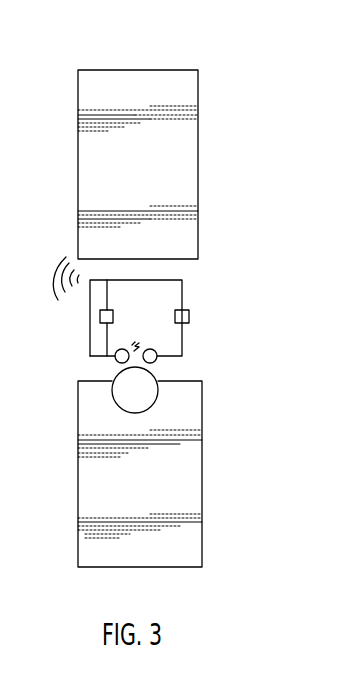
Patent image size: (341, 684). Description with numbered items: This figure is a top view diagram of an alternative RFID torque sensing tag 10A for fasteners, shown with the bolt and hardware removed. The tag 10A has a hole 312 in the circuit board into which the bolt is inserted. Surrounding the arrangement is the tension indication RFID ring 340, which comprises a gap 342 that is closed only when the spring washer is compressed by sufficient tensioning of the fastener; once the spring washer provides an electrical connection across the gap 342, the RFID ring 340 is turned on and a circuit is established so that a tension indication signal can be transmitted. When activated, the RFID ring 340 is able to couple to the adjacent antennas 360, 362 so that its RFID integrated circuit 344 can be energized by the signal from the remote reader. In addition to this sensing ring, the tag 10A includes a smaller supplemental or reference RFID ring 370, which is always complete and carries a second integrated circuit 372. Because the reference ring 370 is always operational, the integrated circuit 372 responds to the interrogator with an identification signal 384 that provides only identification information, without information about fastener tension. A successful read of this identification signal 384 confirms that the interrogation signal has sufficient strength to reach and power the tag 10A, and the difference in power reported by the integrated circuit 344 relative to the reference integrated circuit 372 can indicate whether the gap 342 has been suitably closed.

The RFID tag 10A is at (193, 50).
The antenna 360 is at (77, 162).
The antenna 362 is at (187, 536).
The identification signal 384 is at (72, 254).
The RFID ring 340 is at (183, 283).
The reference RFID ring 370 is at (89, 292).
The integrated circuit 372 is at (100, 318).
The RFID integrated circuit 344 is at (189, 317).
The gap 342 is at (135, 345).
The hole 312 is at (117, 405).